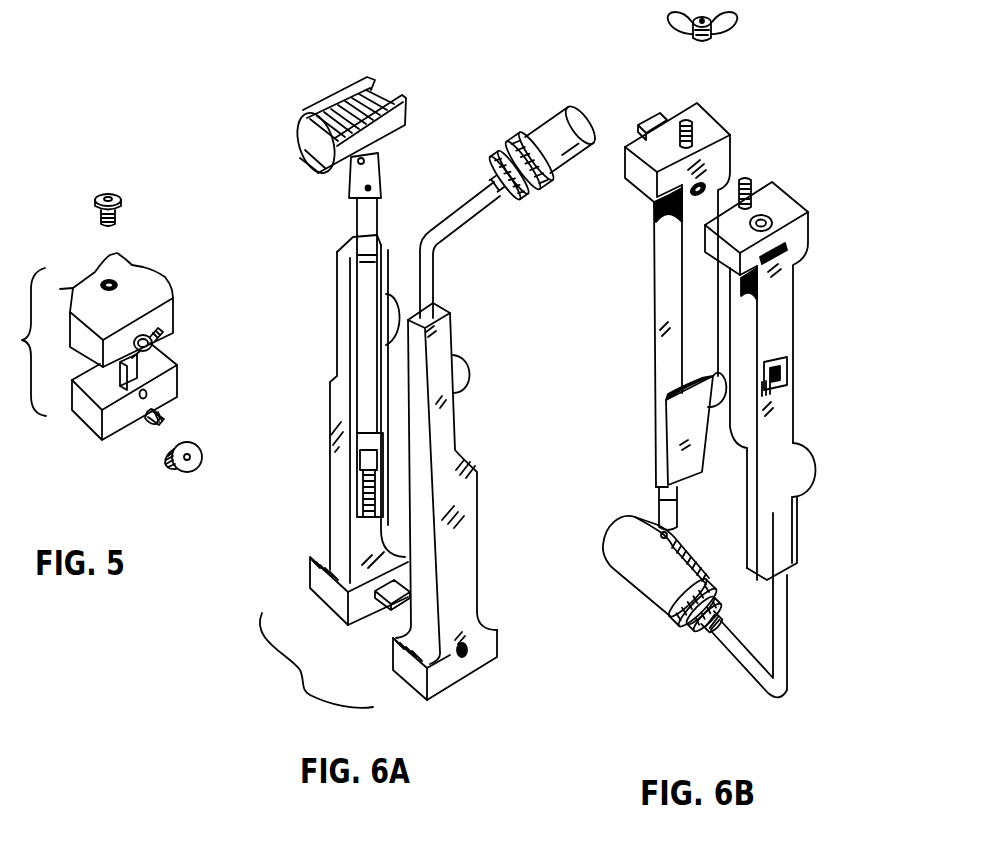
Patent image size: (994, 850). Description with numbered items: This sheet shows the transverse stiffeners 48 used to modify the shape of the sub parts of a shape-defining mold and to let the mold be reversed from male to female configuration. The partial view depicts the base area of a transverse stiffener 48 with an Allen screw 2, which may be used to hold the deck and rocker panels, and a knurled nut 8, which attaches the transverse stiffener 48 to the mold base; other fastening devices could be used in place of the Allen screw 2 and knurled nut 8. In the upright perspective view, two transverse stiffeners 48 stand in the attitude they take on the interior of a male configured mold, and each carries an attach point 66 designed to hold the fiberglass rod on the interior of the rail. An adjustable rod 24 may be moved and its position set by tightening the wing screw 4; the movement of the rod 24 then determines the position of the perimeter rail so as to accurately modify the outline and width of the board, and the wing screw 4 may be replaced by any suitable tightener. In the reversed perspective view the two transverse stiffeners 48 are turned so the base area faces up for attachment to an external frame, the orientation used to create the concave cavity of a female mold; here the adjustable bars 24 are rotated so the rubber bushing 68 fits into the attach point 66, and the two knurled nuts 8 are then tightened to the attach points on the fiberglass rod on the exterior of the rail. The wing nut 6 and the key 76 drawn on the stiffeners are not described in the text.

In FIG. 5, the Allen screw 2 is at (118, 211).
In FIG. 6A, the wing screw 4 is at (391, 294).
In FIG. 6B, the wing screw 4 is at (709, 408).
In FIG. 6B, the wing nut 6 is at (704, 44).
In FIG. 5, the knurled nut 8 is at (203, 459).
In FIG. 6A, the knurled nut 8 is at (512, 148).
In FIG. 6B, the knurled nut 8 is at (724, 613).
In FIG. 6A, the adjustable rod 24 is at (353, 222).
In FIG. 6B, the adjustable rod 24 is at (652, 488).
In FIG. 5, the transverse stiffener 48 is at (173, 287).
In FIG. 6A, the transverse stiffener 48 is at (330, 496).
In FIG. 6B, the transverse stiffener 48 is at (654, 373).
In FIG. 6A, the attach point 66 is at (313, 110).
In FIG. 6B, the attach point 66 is at (625, 580).
In FIG. 6A, the rubber bushing 68 is at (532, 135).
In FIG. 6B, the rubber bushing 68 is at (713, 588).
In FIG. 5, the key 76 is at (148, 365).
In FIG. 6A, the key 76 is at (394, 612).
In FIG. 6B, the key 76 is at (649, 113).